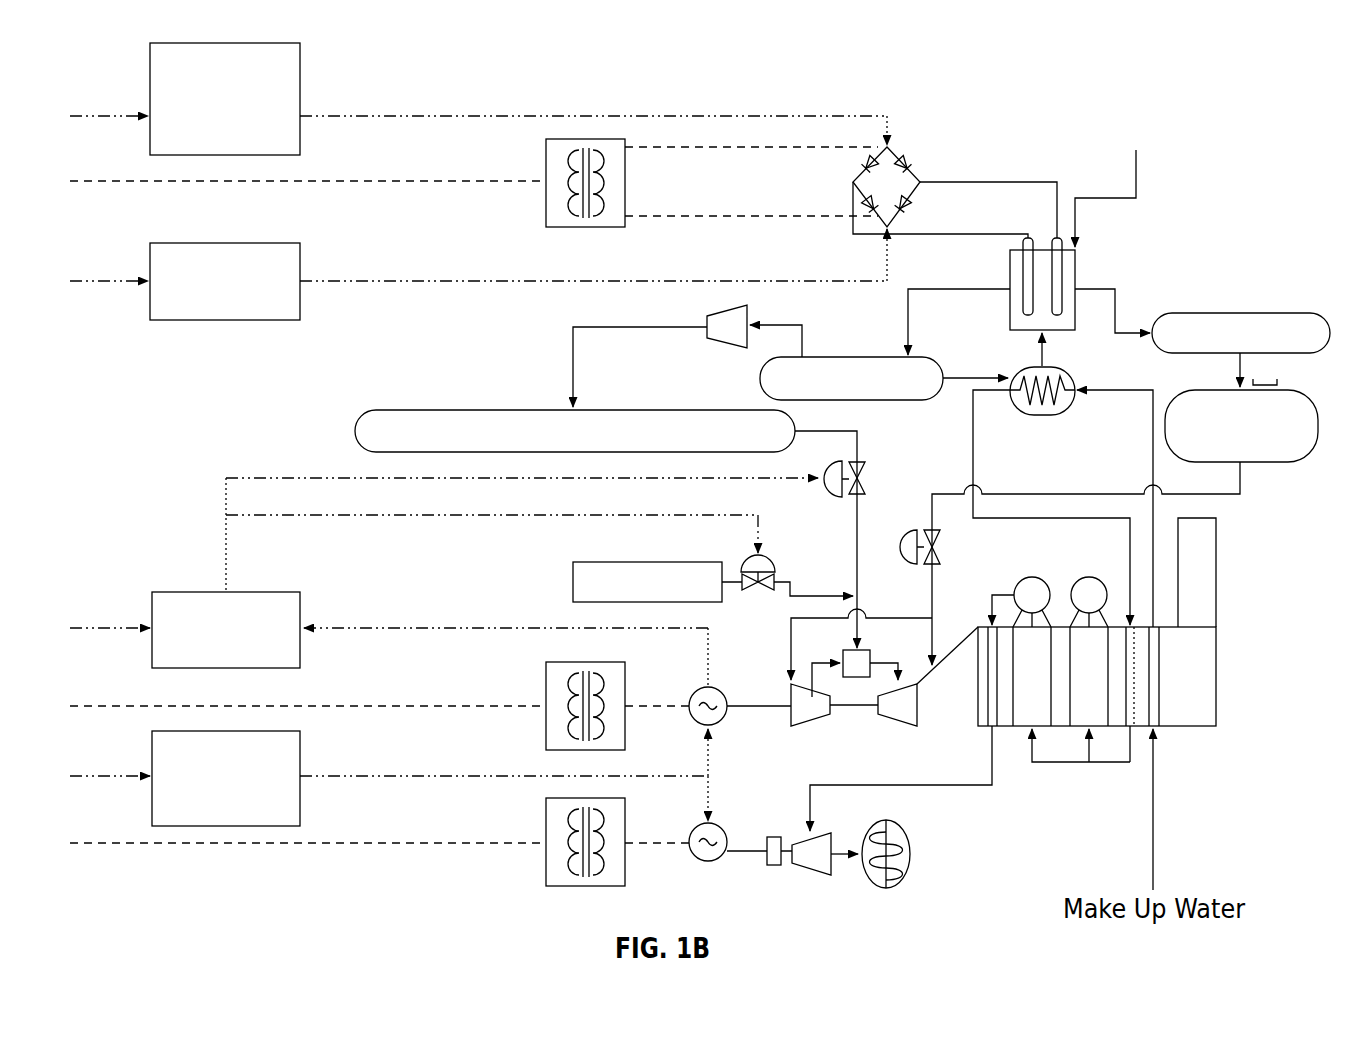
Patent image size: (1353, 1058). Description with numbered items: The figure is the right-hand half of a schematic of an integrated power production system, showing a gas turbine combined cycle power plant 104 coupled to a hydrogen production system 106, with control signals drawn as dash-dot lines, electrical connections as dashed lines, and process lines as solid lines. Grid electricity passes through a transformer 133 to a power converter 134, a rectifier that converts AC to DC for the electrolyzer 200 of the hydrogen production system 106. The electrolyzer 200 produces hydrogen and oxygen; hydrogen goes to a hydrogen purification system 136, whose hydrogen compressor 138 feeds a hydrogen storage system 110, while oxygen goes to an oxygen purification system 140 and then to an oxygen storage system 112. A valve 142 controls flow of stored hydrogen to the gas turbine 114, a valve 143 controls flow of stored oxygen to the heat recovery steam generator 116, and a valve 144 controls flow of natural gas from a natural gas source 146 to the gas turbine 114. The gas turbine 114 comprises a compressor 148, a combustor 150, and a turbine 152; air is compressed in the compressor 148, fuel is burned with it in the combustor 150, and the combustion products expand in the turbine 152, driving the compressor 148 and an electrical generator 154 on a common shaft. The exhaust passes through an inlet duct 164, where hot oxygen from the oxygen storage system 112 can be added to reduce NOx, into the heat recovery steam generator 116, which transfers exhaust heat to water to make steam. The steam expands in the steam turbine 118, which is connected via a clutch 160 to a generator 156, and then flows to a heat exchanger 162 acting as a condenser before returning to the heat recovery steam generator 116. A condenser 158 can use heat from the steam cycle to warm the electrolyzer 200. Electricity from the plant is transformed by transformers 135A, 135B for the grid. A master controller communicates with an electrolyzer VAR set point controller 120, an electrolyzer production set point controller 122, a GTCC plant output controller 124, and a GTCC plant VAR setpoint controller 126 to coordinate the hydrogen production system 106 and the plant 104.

The gas turbine combined cycle power plant 104 is at (993, 582).
The hydrogen production system 106 is at (1247, 210).
The hydrogen storage system 110 is at (338, 428).
The oxygen storage system 112 is at (1292, 472).
The gas turbine 114 is at (854, 714).
The heat recovery steam generator 116 is at (1184, 738).
The steam turbine 118 is at (848, 881).
The electrolyzer VAR set point controller 120 is at (226, 160).
The electrolyzer production set point controller 122 is at (226, 325).
The GTCC plant output controller 124 is at (188, 589).
The GTCC plant VAR setpoint controller 126 is at (305, 797).
The transformer 133 is at (540, 175).
The power converter 134 is at (850, 182).
The transformer 135A is at (540, 718).
The transformer 135B is at (540, 855).
The hydrogen purification system 136 is at (858, 354).
The hydrogen compressor 138 is at (715, 342).
The oxygen purification system 140 is at (1240, 311).
The valve 142 is at (880, 471).
The valve 143 is at (897, 547).
The valve 144 is at (780, 557).
The natural gas source 146 is at (570, 580).
The compressor 148 is at (806, 731).
The combustor 150 is at (863, 645).
The turbine 152 is at (896, 727).
The electrical generator 154 is at (718, 680).
The generator 156 is at (711, 864).
The condenser 158 is at (1040, 421).
The clutch 160 is at (775, 868).
The heat exchanger 162 is at (914, 854).
The inlet duct 164 is at (973, 650).
The electrolyzer 200 is at (1080, 266).